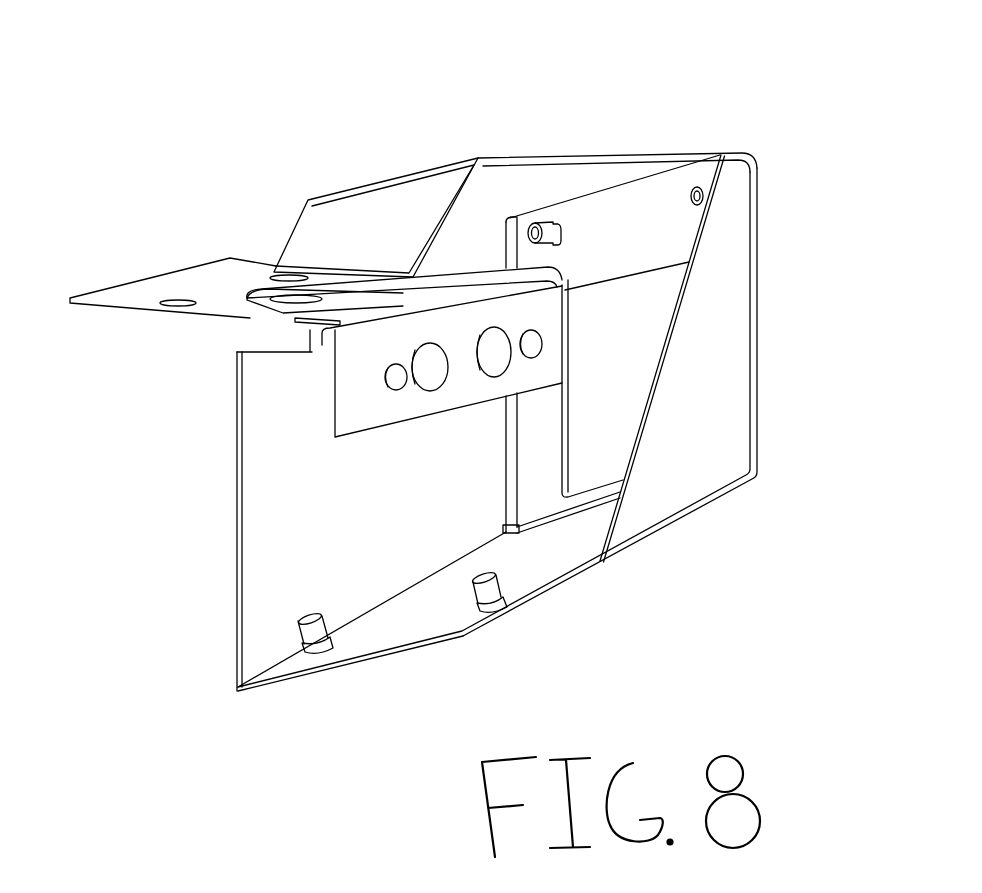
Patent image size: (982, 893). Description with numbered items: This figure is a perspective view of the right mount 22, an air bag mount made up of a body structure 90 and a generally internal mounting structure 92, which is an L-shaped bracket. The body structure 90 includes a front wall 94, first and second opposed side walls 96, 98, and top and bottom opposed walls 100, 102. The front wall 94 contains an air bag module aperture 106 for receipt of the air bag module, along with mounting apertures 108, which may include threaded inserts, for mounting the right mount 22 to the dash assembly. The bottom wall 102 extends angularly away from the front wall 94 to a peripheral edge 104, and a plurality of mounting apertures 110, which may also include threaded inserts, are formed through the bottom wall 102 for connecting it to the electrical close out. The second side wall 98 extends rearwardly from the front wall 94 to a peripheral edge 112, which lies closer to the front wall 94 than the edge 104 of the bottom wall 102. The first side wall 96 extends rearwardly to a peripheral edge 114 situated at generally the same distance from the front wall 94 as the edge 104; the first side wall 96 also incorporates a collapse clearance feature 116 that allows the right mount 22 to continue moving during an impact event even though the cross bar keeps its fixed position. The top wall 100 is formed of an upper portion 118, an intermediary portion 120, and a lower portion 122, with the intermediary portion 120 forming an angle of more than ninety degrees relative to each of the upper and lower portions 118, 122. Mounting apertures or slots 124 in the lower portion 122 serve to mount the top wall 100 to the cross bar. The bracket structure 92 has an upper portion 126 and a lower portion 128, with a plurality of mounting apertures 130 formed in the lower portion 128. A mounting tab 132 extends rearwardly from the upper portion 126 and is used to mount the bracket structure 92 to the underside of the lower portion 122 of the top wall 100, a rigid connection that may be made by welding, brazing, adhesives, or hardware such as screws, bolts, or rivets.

The right mount 22 is at (877, 116).
The body structure 90 is at (814, 352).
The mounting structure 92 is at (365, 444).
The front wall 94 is at (655, 213).
The first side wall 96 is at (238, 566).
The second side wall 98 is at (723, 435).
The top wall 100 is at (392, 178).
The bottom wall 102 is at (433, 623).
The peripheral edge 104 is at (383, 657).
The air bag module aperture 106 is at (586, 412).
The mounting apertures 108 is at (561, 235).
The mounting apertures 110 is at (333, 643).
The peripheral edge 112 is at (677, 320).
The peripheral edge 114 is at (237, 448).
The collapse clearance feature 116 is at (252, 329).
The upper portion 118 is at (548, 158).
The intermediary portion 120 is at (308, 228).
The lower portion 122 is at (135, 298).
The mounting apertures or slot 124 is at (273, 277).
The upper portion 126 is at (572, 290).
The lower portion 128 is at (543, 373).
The mounting apertures 130 is at (386, 370).
The mounting tab 132 is at (320, 308).